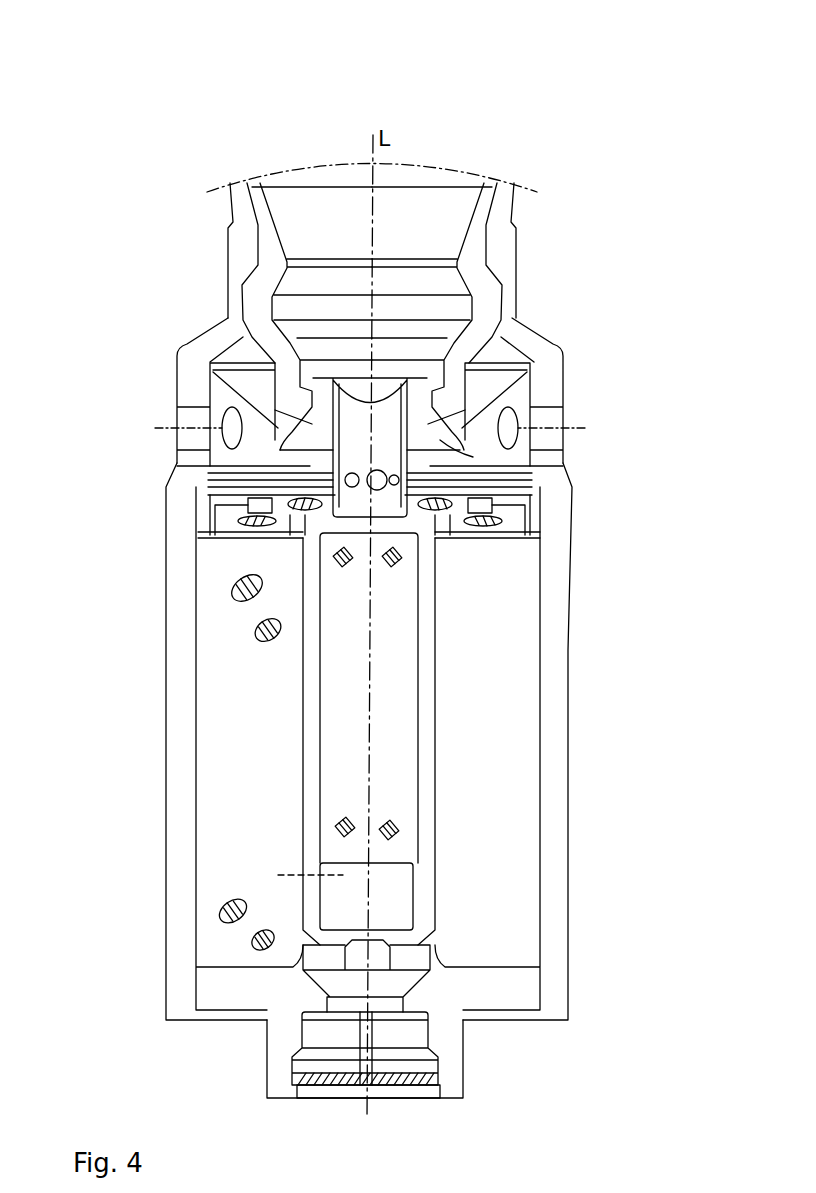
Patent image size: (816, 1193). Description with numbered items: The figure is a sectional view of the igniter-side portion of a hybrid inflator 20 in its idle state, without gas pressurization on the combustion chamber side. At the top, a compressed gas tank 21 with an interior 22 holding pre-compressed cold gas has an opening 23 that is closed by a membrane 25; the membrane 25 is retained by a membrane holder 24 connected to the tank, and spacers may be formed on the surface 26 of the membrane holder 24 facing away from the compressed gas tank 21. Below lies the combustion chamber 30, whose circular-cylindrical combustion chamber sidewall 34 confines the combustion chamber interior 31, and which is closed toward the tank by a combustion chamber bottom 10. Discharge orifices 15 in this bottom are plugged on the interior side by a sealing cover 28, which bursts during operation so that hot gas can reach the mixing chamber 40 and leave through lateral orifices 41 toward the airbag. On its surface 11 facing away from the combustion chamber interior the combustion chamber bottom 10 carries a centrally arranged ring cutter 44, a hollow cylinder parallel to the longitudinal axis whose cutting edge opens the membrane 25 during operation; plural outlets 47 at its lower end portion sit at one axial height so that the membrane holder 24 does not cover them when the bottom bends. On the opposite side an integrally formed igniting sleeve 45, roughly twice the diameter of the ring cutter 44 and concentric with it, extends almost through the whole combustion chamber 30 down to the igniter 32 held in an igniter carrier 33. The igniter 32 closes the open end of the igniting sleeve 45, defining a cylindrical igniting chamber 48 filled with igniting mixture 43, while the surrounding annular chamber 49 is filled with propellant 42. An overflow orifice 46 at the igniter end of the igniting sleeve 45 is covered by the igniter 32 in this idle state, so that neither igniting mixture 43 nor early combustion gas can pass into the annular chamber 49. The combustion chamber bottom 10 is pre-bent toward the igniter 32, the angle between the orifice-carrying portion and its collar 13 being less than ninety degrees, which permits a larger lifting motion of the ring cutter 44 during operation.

The combustion chamber bottom 10 is at (495, 493).
The surface facing away from the combustion chamber interior 11 is at (172, 488).
The collar 13 is at (512, 527).
The discharge orifices 15 is at (470, 473).
The hybrid inflator 20 is at (556, 63).
The compressed gas tank 21 is at (227, 194).
The interior 22 is at (372, 316).
The opening 23 is at (232, 420).
The membrane holder 24 is at (298, 423).
The membrane 25 is at (357, 385).
The surface facing away from the compressed gas tank 26 is at (440, 455).
The sealing cover 28 is at (492, 520).
The combustion chamber 30 is at (575, 709).
The combustion chamber interior 31 is at (525, 930).
The igniter 32 is at (398, 983).
The igniter carrier 33 is at (507, 1000).
The combustion chamber sidewall 34 is at (173, 907).
The mixing chamber 40 is at (518, 377).
The lateral orifices 41 is at (188, 418).
The propellant 42 is at (250, 637).
The igniting mixture 43 is at (394, 565).
The ring cutter 44 is at (435, 463).
The igniting sleeve 45 is at (424, 887).
The overflow orifice 46 is at (300, 873).
The outlets 47 is at (245, 492).
The igniting chamber 48 is at (332, 765).
The annular chamber 49 is at (513, 777).